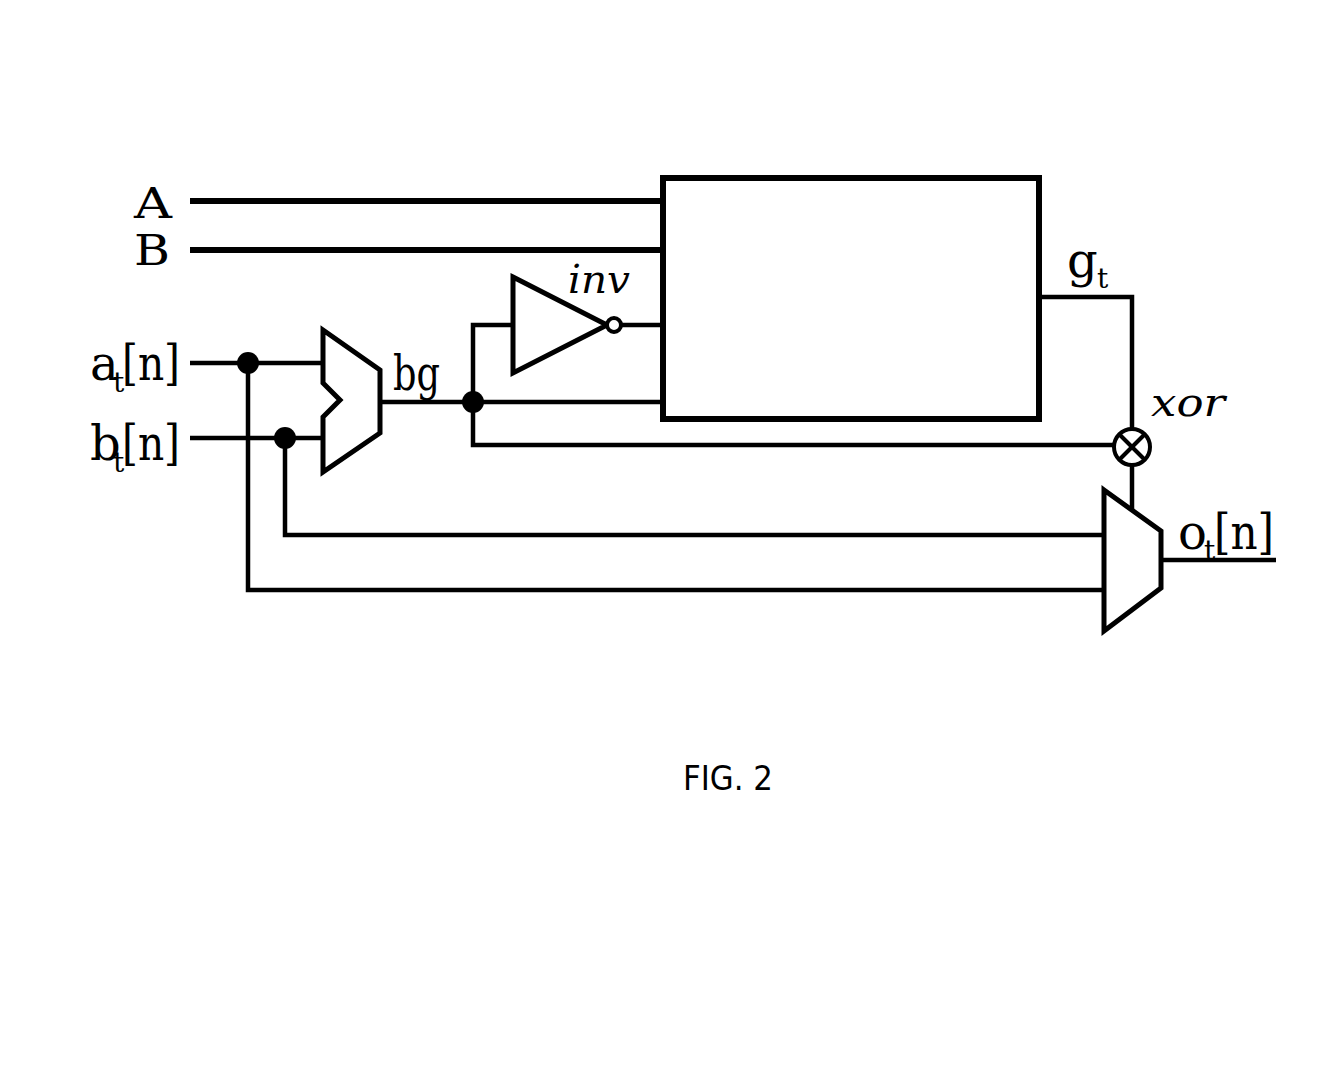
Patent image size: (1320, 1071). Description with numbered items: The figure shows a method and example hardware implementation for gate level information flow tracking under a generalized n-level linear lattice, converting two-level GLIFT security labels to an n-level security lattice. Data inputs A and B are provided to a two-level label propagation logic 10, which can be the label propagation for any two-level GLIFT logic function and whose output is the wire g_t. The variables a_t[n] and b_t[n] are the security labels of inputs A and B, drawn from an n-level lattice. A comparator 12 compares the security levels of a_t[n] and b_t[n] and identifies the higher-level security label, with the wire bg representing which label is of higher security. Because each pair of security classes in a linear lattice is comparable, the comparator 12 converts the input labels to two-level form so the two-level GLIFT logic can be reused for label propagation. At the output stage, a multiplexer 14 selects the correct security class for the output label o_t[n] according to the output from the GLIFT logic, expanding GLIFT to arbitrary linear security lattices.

The two-level label propagation logic 10 is at (811, 185).
The comparator 12 is at (355, 447).
The multiplexer 14 is at (1126, 584).